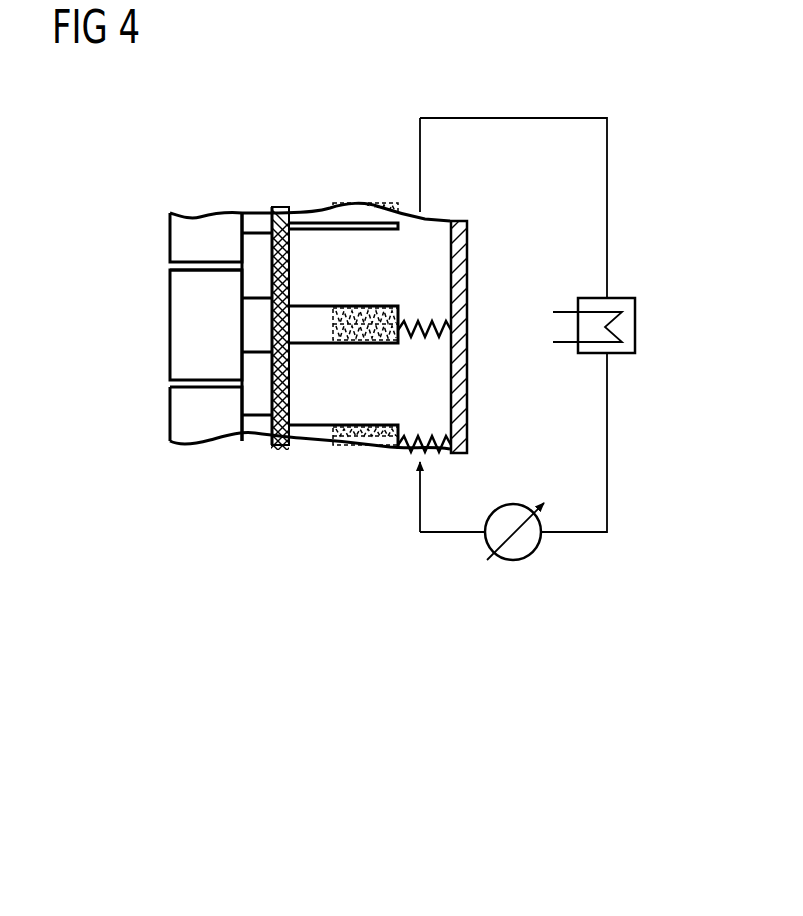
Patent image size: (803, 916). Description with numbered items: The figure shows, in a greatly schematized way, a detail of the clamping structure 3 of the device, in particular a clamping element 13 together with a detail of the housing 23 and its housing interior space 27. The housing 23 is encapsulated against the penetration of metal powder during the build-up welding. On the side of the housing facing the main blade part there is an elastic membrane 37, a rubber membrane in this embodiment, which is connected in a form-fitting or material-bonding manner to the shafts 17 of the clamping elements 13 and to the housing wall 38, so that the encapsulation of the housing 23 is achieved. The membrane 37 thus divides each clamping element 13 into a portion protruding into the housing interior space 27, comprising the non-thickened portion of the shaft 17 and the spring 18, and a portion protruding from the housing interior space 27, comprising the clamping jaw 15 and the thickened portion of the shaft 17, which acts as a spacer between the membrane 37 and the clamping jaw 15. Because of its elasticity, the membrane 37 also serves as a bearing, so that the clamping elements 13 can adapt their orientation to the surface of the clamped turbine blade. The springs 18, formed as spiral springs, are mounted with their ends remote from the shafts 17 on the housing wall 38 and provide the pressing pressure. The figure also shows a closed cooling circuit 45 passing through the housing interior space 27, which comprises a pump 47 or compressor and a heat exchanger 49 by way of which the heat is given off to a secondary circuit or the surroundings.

The clamping structure 3 is at (125, 228).
The clamping element 13 is at (135, 294).
The clamping jaw 15 is at (185, 346).
The shaft 17 is at (338, 305).
The spring 18 is at (427, 316).
The housing 23 is at (312, 170).
The housing interior space 27 is at (433, 352).
The elastic membrane 37 is at (284, 440).
The housing wall 38 is at (458, 251).
The cooling circuit 45 is at (556, 95).
The pump 47 is at (533, 558).
The heat exchanger 49 is at (636, 326).